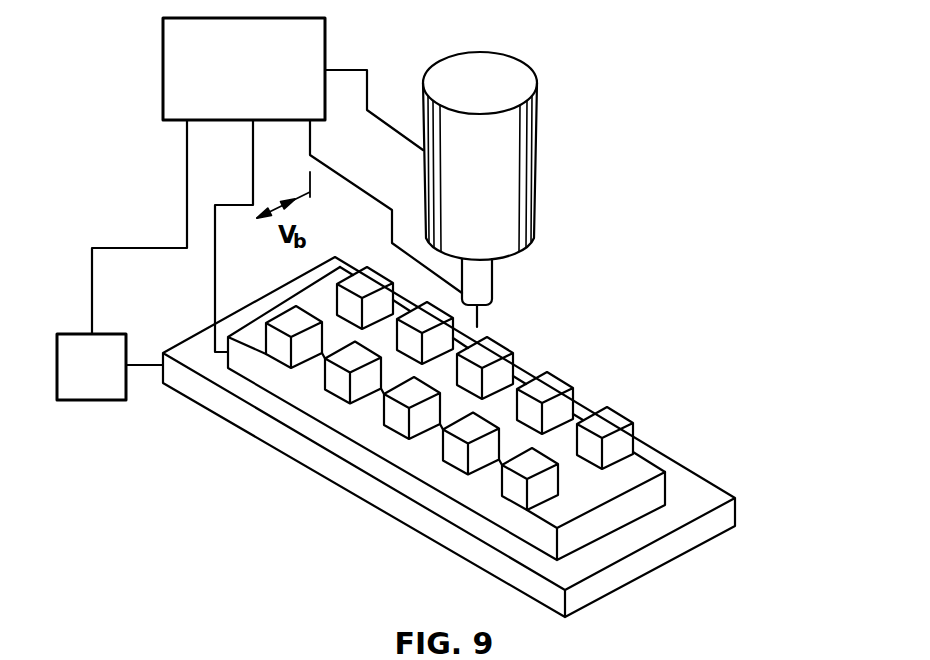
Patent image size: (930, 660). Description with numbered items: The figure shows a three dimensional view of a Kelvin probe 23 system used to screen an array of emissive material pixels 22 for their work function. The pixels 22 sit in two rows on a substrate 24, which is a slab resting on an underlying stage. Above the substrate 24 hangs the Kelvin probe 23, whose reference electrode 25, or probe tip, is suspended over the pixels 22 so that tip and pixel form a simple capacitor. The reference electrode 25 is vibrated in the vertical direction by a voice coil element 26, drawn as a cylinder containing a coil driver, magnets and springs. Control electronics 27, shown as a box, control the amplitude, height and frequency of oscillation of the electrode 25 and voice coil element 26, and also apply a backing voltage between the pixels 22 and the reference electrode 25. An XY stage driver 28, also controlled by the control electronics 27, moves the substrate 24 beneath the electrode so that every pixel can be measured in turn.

The pixels 22 is at (365, 276).
The Kelvin probe 23 is at (358, 46).
The substrate 24 is at (737, 510).
The reference electrode 25 is at (498, 298).
The voice coil element 26 is at (496, 184).
The control electronics 27 is at (220, 77).
The XY stage driver 28 is at (110, 374).